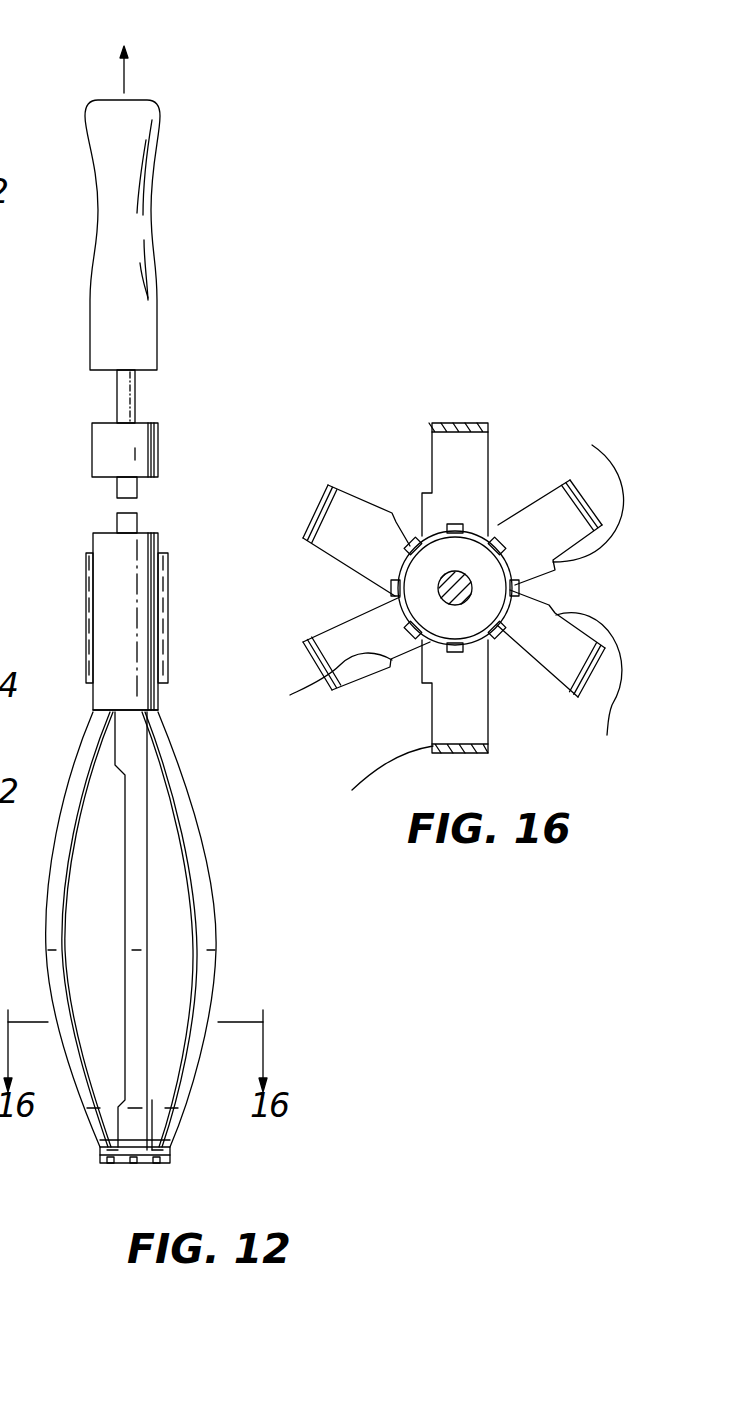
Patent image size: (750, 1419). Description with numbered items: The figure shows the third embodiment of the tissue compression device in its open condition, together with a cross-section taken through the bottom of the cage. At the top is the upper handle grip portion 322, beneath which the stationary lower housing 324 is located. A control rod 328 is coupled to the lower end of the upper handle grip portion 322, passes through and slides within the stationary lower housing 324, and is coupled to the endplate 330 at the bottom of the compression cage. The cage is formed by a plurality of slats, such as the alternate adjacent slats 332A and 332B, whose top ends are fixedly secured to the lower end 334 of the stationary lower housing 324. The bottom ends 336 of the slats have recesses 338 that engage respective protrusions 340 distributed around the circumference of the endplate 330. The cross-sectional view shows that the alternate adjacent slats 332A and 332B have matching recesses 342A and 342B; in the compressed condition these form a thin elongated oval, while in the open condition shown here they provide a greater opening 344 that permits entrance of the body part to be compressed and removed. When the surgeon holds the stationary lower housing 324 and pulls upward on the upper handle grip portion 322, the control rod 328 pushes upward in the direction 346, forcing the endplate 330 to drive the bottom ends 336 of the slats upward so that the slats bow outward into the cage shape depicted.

In FIG. 12, the upper handle grip portion 322 is at (145, 242).
In FIG. 12, the stationary lower housing 324 is at (135, 558).
In FIG. 12, the control rod 328 is at (135, 398).
In FIG. 16, the control rod 328 is at (437, 590).
In FIG. 12, the endplate 330 is at (125, 1165).
In FIG. 16, the endplate 330 is at (399, 585).
In FIG. 16, the slat 332A is at (318, 500).
In FIG. 16, the slat 332B is at (447, 425).
In FIG. 12, the lower end of the stationary lower housing 334 is at (125, 702).
In FIG. 12, the bottom ends of the slats 336 is at (118, 1152).
In FIG. 16, the bottom ends of the slats 336 is at (473, 532).
In FIG. 16, the recesses 338 is at (455, 530).
In FIG. 12, the protrusions 340 is at (110, 1163).
In FIG. 16, the protrusions 340 is at (407, 562).
In FIG. 16, the recess 342A is at (392, 513).
In FIG. 16, the recess 342B is at (425, 490).
In FIG. 12, the opening 344 is at (100, 878).
In FIG. 12, the direction 346 is at (128, 78).